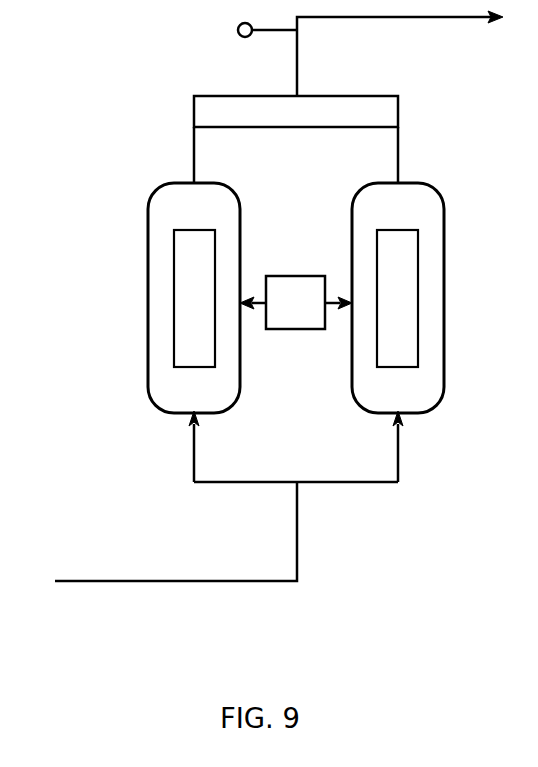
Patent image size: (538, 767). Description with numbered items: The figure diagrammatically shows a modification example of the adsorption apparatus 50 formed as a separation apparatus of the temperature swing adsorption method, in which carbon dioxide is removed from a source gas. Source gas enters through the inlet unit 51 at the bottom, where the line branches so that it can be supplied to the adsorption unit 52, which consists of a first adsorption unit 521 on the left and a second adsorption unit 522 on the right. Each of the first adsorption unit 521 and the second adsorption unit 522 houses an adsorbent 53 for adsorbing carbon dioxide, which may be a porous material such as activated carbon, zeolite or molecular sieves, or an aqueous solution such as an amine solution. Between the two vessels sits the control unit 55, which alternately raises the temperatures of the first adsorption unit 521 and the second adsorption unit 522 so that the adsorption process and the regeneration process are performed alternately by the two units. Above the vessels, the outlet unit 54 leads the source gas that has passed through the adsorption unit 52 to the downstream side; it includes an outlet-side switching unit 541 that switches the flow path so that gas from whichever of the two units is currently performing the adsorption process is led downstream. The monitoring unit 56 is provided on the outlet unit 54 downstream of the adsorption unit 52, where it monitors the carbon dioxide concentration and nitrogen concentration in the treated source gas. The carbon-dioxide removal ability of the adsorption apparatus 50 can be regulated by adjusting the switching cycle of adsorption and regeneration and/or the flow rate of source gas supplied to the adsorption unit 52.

The adsorption apparatus 50 is at (46, 46).
The inlet unit 51 is at (297, 557).
The adsorption unit 52 is at (288, 275).
The first adsorption unit 521 is at (228, 183).
The second adsorption unit 522 is at (432, 183).
The adsorbent 53 is at (194, 311).
The outlet unit 54 is at (297, 60).
The outlet-side switching unit 541 is at (398, 108).
The control unit 55 is at (292, 276).
The monitoring unit 56 is at (238, 30).